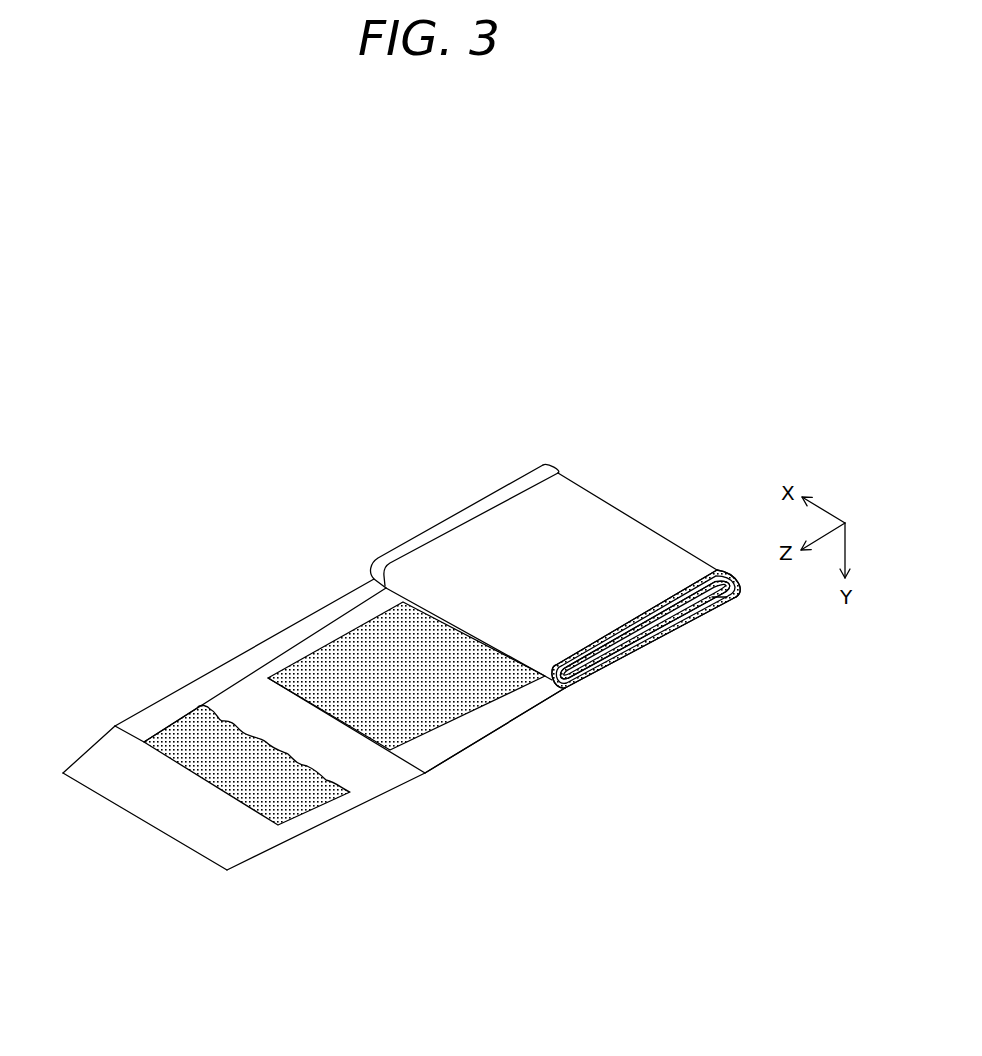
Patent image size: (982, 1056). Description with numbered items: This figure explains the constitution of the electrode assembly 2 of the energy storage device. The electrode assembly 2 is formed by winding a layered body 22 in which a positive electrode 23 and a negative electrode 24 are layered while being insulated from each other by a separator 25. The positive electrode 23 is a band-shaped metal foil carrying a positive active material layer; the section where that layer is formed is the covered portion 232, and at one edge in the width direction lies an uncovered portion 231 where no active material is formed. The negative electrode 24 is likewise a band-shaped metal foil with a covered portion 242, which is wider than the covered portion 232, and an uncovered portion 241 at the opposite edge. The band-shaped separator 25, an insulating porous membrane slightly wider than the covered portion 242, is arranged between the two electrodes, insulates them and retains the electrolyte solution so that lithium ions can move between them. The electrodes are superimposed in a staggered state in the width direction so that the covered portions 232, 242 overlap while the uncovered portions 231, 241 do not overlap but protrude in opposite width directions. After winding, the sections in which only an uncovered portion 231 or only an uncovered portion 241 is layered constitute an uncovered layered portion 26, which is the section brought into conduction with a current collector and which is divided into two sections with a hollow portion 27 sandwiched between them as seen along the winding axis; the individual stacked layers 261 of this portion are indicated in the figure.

The electrode assembly 2 is at (670, 508).
The layered body 22 is at (648, 668).
The positive electrode 23 is at (352, 619).
The uncovered portion 231 is at (462, 733).
The covered portion 232 is at (317, 673).
The negative electrode 24 is at (158, 694).
The uncovered portion 241 is at (205, 685).
The covered portion 242 is at (287, 802).
The separator 25 is at (235, 842).
The uncovered layered portion 26 is at (467, 515).
The sheet layer of folded sheet 261 is at (656, 616).
The hollow portion 27 is at (738, 604).